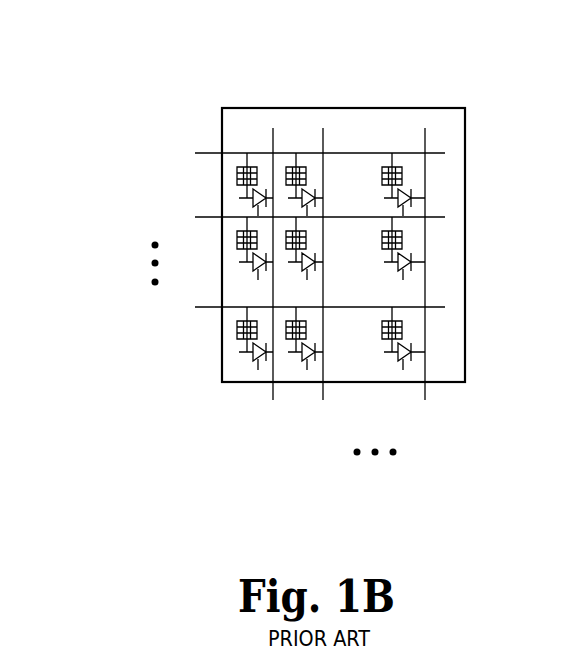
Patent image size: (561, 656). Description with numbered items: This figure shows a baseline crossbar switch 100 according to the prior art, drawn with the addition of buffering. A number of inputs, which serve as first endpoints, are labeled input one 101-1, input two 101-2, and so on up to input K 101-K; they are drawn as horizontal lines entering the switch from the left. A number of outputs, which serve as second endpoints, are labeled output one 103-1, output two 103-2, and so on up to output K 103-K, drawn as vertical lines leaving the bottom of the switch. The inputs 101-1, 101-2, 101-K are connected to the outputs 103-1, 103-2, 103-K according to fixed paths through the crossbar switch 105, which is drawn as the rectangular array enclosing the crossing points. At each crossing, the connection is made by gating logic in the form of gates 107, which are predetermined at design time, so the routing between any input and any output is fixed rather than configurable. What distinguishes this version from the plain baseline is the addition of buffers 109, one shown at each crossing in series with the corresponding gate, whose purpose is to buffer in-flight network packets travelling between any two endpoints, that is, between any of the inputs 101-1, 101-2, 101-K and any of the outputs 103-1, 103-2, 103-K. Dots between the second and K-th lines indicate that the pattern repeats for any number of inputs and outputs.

The baseline crossbar switch 100 is at (183, 70).
The input 101-1 is at (111, 153).
The input 101-2 is at (111, 217).
The input 101-K is at (111, 306).
The output 103-1 is at (257, 490).
The output 103-2 is at (332, 488).
The output 103-K is at (433, 488).
The crossbar switch 105 is at (293, 108).
The gates 107 is at (260, 199).
The buffers 109 is at (252, 167).